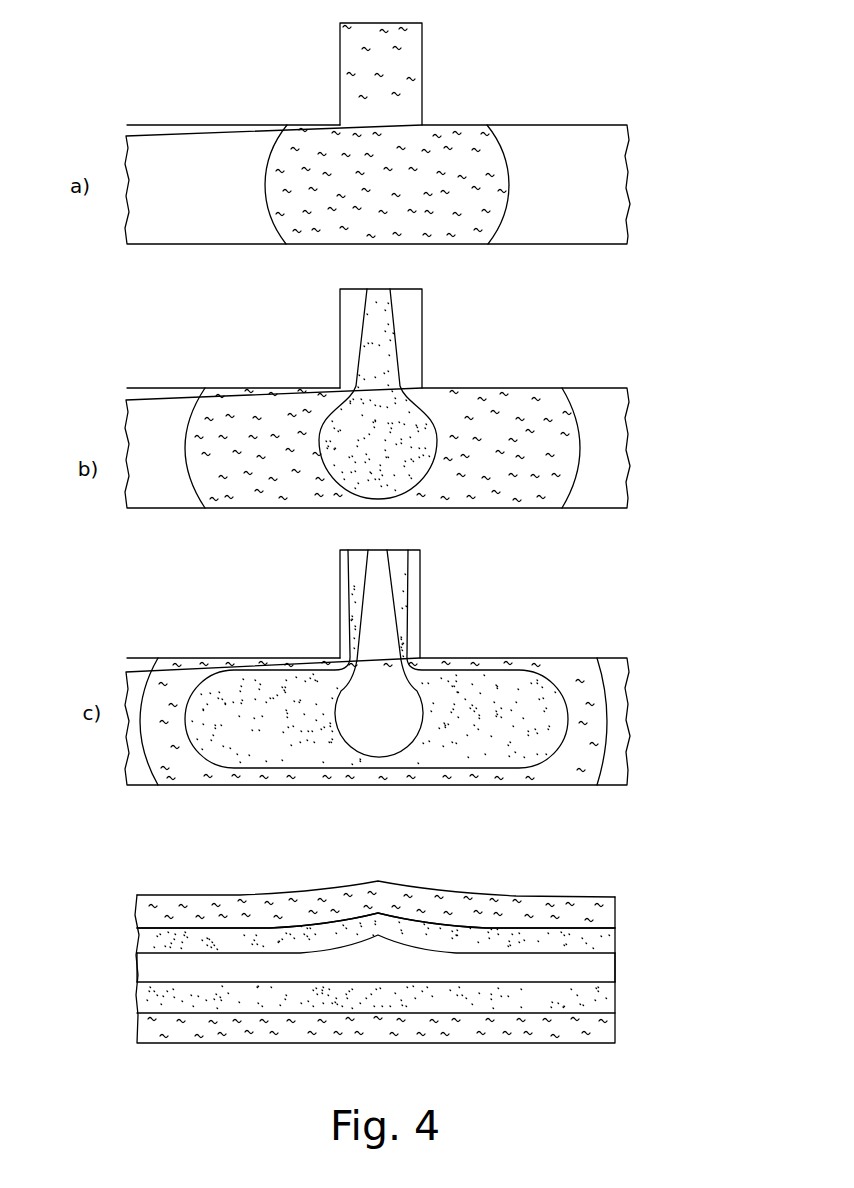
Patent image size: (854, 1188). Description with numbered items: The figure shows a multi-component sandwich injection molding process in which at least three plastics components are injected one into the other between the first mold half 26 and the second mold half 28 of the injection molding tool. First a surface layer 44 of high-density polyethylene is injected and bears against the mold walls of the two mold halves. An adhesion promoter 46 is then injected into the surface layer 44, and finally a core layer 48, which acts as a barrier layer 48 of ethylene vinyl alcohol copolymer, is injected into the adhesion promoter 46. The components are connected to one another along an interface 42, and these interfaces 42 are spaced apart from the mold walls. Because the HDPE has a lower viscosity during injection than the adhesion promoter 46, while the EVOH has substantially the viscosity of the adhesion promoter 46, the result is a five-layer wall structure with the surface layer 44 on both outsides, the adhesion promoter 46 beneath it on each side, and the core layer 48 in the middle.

The first mold half 26 is at (207, 245).
The second mold half 28 is at (195, 125).
The interface 42 is at (570, 713).
The surface layer 44 is at (470, 163).
The adhesion promoter 46 is at (380, 397).
The core layer (barrier layer) 48 is at (380, 690).